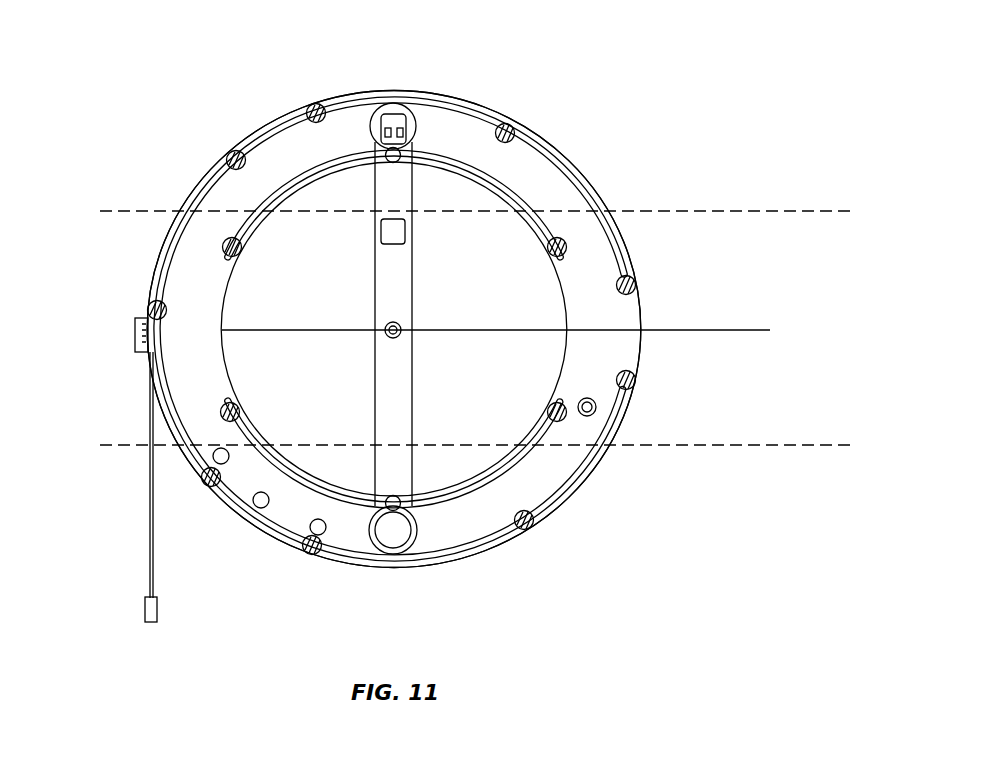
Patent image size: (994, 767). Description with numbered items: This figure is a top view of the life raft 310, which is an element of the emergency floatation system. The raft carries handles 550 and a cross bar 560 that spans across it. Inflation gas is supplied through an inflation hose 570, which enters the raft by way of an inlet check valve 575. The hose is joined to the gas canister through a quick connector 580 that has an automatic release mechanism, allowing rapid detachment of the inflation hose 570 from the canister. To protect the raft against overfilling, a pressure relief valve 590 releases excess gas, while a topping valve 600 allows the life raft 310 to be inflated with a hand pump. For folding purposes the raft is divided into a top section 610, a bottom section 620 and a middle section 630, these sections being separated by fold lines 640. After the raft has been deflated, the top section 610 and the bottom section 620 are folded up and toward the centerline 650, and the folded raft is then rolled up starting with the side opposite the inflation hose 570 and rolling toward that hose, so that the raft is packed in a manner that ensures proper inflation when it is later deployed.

The life raft 310 is at (495, 283).
The handles 550 is at (278, 182).
The cross bar 560 is at (392, 410).
The inflation hose 570 is at (148, 504).
The inlet check valve 575 is at (134, 333).
The quick connector 580 is at (144, 608).
The pressure relief valve 590 is at (256, 507).
The topping valve 600 is at (311, 527).
The top section 610 is at (600, 102).
The bottom section 620 is at (505, 586).
The middle section 630 is at (655, 250).
The fold lines 640 is at (792, 210).
The centerline 650 is at (708, 328).